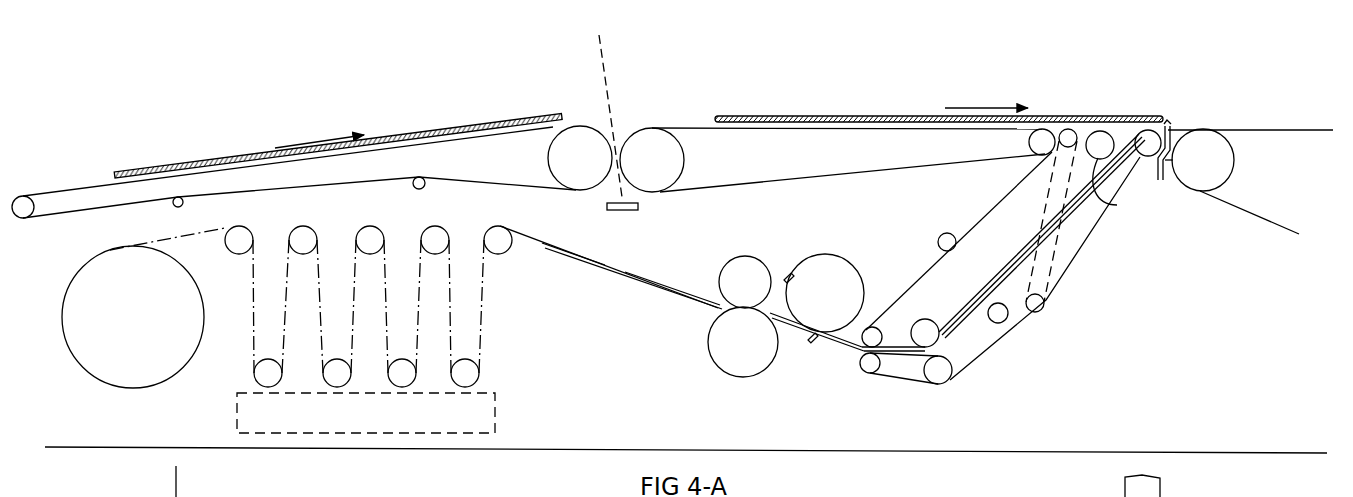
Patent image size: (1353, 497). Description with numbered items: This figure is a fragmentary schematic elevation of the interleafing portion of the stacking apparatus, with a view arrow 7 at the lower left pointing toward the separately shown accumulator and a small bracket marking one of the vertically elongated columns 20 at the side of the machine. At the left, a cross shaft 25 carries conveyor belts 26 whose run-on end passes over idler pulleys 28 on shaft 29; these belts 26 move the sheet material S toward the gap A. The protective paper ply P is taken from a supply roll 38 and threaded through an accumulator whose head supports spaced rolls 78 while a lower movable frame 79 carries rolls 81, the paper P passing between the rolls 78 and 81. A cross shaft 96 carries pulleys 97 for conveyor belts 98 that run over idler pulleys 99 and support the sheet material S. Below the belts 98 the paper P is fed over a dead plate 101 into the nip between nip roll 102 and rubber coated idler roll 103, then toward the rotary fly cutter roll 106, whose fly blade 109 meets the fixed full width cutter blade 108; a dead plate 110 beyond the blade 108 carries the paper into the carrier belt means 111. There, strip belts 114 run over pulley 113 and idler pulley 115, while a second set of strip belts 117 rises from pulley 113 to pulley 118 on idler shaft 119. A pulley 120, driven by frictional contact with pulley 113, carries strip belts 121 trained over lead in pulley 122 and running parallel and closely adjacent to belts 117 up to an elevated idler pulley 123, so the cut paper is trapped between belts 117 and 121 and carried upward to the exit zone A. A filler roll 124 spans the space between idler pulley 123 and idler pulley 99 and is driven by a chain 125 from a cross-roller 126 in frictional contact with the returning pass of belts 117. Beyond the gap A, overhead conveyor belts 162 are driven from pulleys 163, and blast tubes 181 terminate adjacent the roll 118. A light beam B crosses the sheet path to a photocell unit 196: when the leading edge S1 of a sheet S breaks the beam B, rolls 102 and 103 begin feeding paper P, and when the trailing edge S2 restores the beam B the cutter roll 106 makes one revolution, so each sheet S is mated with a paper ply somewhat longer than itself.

The section line 7 is at (170, 481).
The columns 20 is at (1162, 486).
The cross shaft 25 is at (578, 160).
The conveyor belts 26 is at (68, 186).
The idler pulleys 28 is at (36, 207).
The shaft 29 is at (24, 218).
The supply roll 38 is at (62, 318).
The rolls 78 is at (300, 228).
The lower movable frame 79 is at (236, 412).
The rolls 81 is at (322, 372).
The cross shaft 96 is at (655, 165).
The pulleys 97 is at (684, 162).
The conveyor belts 98 is at (788, 124).
The idler pulleys 99 is at (1029, 142).
The dead plate 101 is at (598, 268).
The nip roll 102 is at (708, 344).
The rubber coated idler roll 103 is at (732, 260).
The rotary fly cutter roll 106 is at (855, 272).
The cutter blade 108 is at (810, 344).
The fly blade 109 is at (787, 273).
The third dead plate 110 is at (842, 352).
The carrier belt means 111 is at (980, 353).
The pulley 113 is at (946, 384).
The strip belts 114 is at (900, 380).
The idler pulley 115 is at (868, 372).
The strip belts 117 is at (1008, 338).
The pulley 118 is at (1134, 157).
The idler shaft 119 is at (1146, 165).
The pulley 120 is at (928, 318).
The strip belts 121 is at (1000, 215).
The lead in pulley 122 is at (872, 326).
The idler pulley 123 is at (1102, 130).
The filler roll 124 is at (1070, 128).
The chain 125 is at (1062, 242).
The cross-roller 126 is at (1044, 306).
The conveyor belts 162 is at (1250, 130).
The pulleys 163 is at (1233, 178).
The blast tubes 181 is at (1170, 172).
The sensor 196 is at (622, 211).
The exit zone A is at (1128, 130).
The light beam B is at (612, 92).
The protective paper ply P is at (253, 300).
The sheet material S is at (410, 134).
The leading edge S1 is at (560, 122).
The trailing edge S2 is at (116, 176).